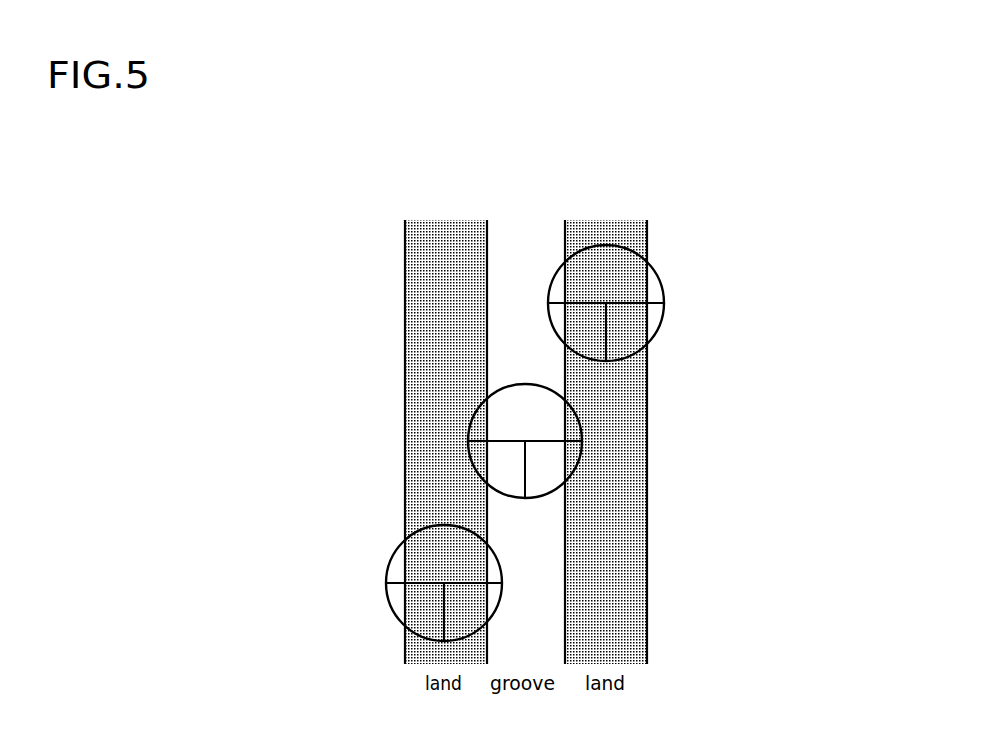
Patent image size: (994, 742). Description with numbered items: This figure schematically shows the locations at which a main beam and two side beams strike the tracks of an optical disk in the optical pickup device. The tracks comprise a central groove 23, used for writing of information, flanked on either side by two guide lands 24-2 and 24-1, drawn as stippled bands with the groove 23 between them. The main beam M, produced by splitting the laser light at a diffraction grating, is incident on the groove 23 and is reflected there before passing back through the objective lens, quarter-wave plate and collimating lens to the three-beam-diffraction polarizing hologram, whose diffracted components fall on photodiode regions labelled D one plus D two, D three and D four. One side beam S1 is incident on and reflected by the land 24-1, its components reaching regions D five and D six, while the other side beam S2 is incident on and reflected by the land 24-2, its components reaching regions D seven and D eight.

The guide land 24-2 is at (448, 219).
The guide land 24-1 is at (607, 219).
The groove 23 is at (523, 228).
The side beam S1 is at (664, 283).
The side beam S2 is at (393, 554).
The main beam M is at (531, 384).